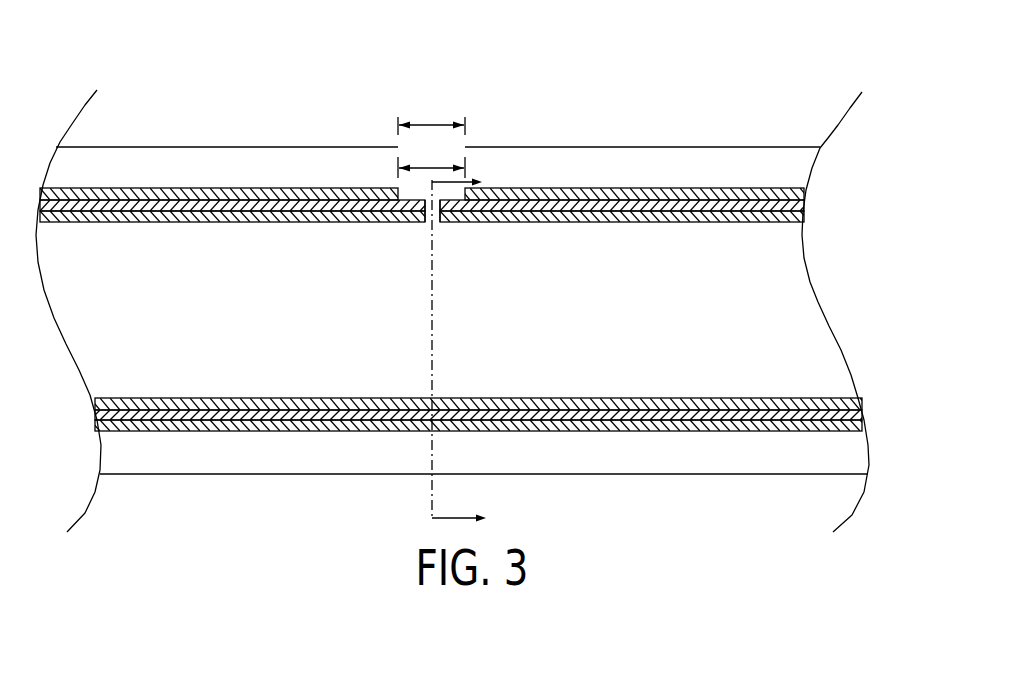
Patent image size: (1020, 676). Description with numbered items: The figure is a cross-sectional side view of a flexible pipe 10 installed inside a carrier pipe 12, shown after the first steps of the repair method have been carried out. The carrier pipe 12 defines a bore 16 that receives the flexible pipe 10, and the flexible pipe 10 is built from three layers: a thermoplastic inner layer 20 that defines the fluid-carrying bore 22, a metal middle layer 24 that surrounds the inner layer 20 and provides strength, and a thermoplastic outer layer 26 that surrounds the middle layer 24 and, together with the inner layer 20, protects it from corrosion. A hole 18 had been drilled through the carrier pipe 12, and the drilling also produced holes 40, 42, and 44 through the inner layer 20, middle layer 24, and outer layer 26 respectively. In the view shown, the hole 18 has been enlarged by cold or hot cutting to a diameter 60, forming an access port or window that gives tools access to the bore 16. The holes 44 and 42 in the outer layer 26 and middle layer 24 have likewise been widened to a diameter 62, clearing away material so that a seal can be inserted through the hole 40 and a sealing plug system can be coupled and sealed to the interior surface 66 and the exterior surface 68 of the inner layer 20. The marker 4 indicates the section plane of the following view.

The flexible pipe 10 is at (856, 336).
The carrier pipe 12 is at (190, 147).
The bore 16 is at (199, 464).
The hole 18 is at (480, 146).
The inner layer 20 is at (606, 214).
The bore 22 is at (192, 309).
The middle layer 24 is at (672, 206).
The outer layer 26 is at (722, 195).
The hole 40 is at (426, 224).
The hole 42 is at (442, 224).
The hole 44 is at (399, 192).
The diameter 60 is at (432, 125).
The diameter 62 is at (441, 168).
The interior surface 66 is at (233, 223).
The exterior surface 68 is at (555, 190).
The section line 4 is at (466, 349).